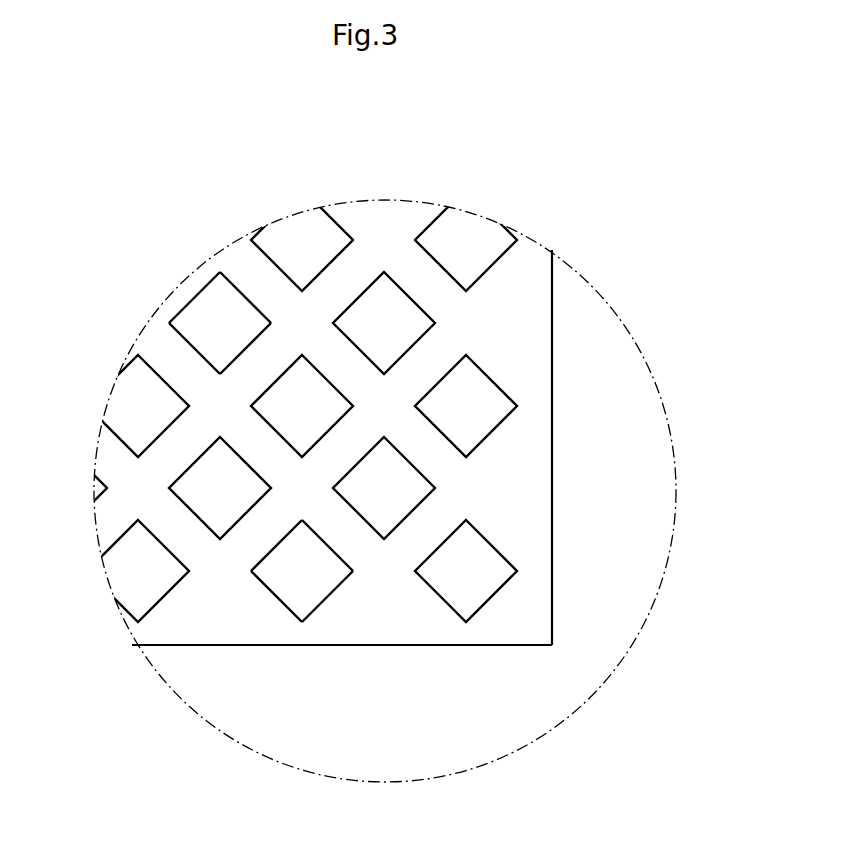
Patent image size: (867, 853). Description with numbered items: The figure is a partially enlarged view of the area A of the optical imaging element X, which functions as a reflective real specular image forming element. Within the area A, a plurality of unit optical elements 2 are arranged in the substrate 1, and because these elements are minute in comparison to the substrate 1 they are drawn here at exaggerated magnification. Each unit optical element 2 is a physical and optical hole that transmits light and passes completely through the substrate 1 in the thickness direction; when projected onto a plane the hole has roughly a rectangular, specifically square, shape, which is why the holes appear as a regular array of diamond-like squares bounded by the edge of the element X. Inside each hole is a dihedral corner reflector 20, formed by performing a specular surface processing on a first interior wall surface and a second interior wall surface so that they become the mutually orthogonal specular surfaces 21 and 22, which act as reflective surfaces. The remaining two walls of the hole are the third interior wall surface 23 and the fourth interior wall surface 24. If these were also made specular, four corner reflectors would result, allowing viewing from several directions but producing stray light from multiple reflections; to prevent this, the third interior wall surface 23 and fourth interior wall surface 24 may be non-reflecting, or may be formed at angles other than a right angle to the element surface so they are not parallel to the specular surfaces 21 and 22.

The substrate 1 is at (564, 438).
The unit optical element 2 is at (302, 446).
The dihedral corner reflector 20 is at (303, 460).
The specular surface (first interior wall surface) 21 is at (246, 299).
The specular surface (second interior wall surface) 22 is at (203, 292).
The third interior wall surface 23 is at (246, 341).
The fourth interior wall surface 24 is at (186, 347).
The optical imaging element (reflective real specular image forming element) X is at (566, 302).
The area A is at (676, 505).